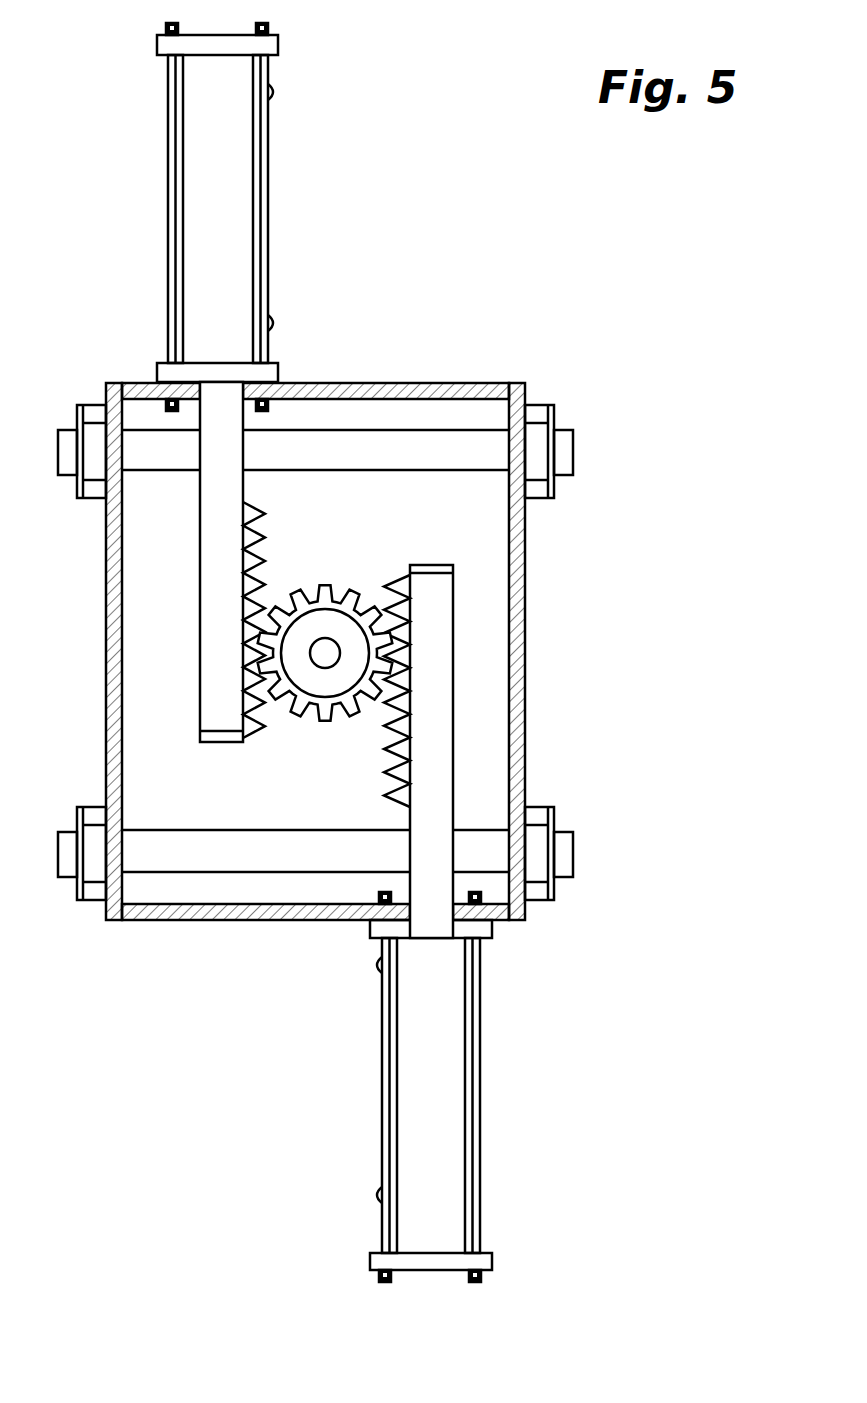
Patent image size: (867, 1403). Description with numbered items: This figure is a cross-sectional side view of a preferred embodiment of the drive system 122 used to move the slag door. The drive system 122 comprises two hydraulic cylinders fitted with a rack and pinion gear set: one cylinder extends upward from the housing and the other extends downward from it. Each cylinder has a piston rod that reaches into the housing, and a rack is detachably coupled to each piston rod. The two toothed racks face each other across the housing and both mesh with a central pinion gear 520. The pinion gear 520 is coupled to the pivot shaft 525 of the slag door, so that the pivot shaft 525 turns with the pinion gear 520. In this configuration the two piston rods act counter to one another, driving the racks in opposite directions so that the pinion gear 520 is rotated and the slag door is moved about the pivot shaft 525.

The drive system 122 is at (500, 335).
The pinion gear 520 is at (297, 713).
The pivot shaft 525 is at (325, 660).